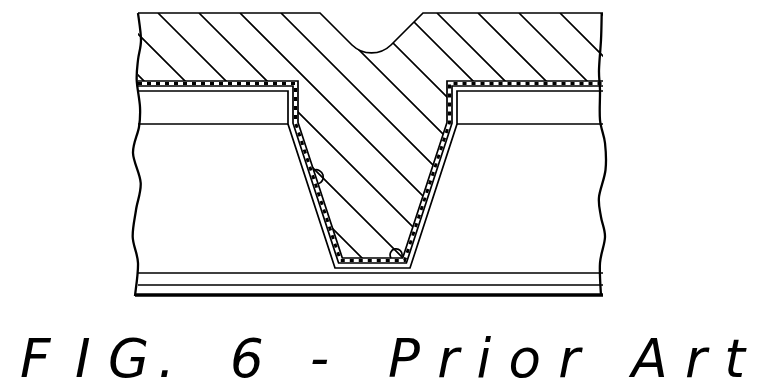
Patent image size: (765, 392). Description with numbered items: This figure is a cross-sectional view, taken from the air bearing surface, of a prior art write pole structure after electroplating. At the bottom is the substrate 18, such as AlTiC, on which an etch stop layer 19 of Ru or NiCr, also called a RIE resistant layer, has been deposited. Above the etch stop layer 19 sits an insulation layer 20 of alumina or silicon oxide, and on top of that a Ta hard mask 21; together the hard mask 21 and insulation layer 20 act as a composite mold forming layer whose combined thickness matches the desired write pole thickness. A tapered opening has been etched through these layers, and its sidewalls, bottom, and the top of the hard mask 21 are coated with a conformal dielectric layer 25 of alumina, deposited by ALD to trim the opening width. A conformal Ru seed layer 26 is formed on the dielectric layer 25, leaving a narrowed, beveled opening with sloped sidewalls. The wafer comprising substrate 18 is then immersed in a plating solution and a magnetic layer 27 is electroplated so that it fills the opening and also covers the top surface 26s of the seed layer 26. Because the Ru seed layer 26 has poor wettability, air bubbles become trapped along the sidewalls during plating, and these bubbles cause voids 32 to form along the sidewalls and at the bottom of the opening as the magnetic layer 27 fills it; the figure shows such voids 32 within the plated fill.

The substrate 18 is at (138, 294).
The etch stop layer 19 is at (587, 278).
The insulation layer 20 is at (587, 206).
The hard mask 21 is at (147, 104).
The dielectric layer 25 is at (590, 85).
The seed layer 26 is at (600, 72).
The top surface of the seed layer 26s is at (158, 82).
The magnetic layer 27 is at (588, 22).
The voids 32 is at (318, 180).